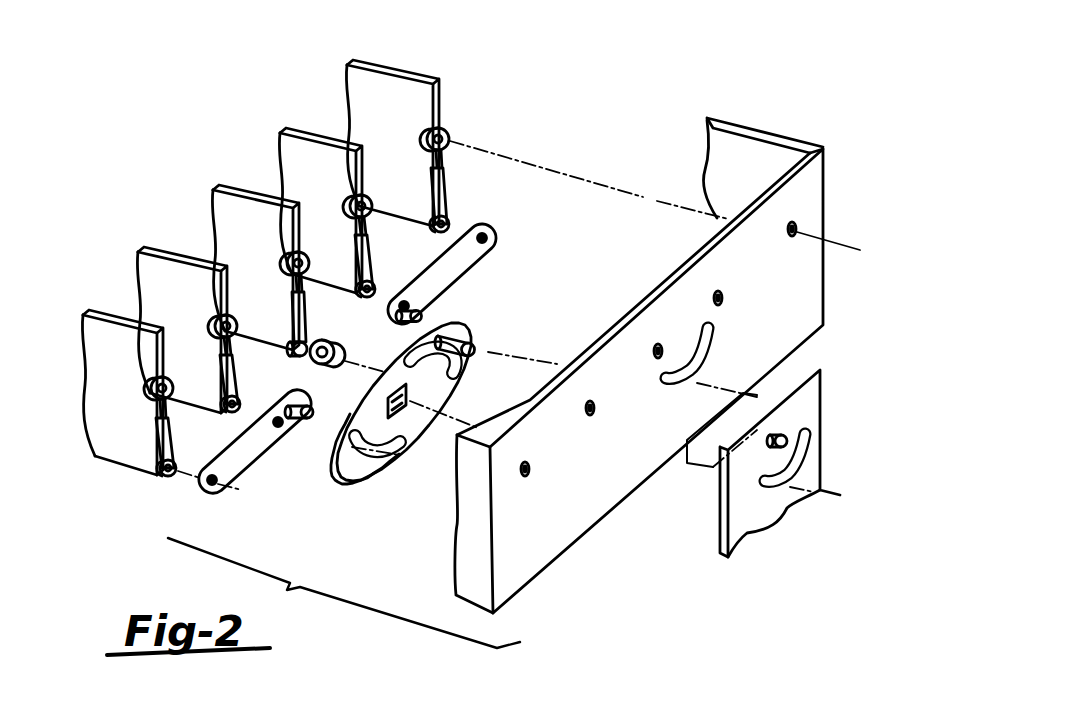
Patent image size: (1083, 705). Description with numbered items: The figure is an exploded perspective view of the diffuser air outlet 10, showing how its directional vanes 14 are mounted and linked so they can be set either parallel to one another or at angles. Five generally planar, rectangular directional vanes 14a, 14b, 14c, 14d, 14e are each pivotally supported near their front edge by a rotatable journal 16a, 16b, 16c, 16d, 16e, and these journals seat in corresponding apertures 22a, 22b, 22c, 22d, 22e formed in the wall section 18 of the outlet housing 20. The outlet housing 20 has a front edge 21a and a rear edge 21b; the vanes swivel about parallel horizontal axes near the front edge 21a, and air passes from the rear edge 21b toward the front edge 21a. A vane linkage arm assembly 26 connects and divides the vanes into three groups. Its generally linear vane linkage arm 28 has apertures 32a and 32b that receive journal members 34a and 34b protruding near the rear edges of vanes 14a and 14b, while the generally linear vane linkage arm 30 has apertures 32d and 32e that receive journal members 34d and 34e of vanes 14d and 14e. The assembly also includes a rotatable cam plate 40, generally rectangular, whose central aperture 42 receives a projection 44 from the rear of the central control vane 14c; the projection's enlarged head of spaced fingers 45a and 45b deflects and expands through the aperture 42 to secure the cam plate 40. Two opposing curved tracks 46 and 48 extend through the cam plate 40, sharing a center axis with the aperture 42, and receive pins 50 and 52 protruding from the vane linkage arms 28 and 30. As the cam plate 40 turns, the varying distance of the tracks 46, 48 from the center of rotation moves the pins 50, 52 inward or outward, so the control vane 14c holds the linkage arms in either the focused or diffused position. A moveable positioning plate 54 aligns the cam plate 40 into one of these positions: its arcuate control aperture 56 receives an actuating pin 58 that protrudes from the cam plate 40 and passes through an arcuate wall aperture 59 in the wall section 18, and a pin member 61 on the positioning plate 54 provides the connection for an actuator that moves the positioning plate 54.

The diffuser air outlet 10 is at (595, 110).
The directional vanes 14 is at (413, 65).
The directional vane 14a is at (352, 65).
The directional vane 14b is at (282, 134).
The directional vane 14c is at (216, 191).
The directional vane 14d is at (150, 255).
The directional vane 14e is at (94, 318).
The rotatable journal 16a is at (450, 132).
The rotatable journal 16b is at (374, 201).
The rotatable journal 16c is at (311, 261).
The rotatable journal 16d is at (239, 323).
The rotatable journal 16e is at (172, 382).
The wall section 18 is at (526, 546).
The outlet housing 20 is at (826, 183).
The front edge 21a is at (792, 173).
The rear edge 21b is at (584, 534).
The aperture 22a is at (798, 228).
The aperture 22b is at (724, 298).
The aperture 22c is at (662, 344).
The aperture 22d is at (597, 403).
The aperture 22e is at (532, 466).
The vane linkage arm assembly 26 is at (343, 452).
The vane linkage arm 28 is at (462, 283).
The vane linkage arm 30 is at (264, 462).
The aperture 32a is at (487, 236).
The aperture 32b is at (425, 314).
The aperture 32d is at (278, 418).
The aperture 32e is at (210, 490).
The journal member 34a is at (453, 216).
The journal member 34b is at (381, 288).
The journal member 34d is at (243, 403).
The journal member 34e is at (178, 466).
The cam plate 40 is at (437, 458).
The central aperture 42 is at (409, 398).
The projection 44 is at (307, 338).
The finger 45a is at (334, 345).
The finger 45b is at (336, 360).
The track 46 is at (463, 373).
The track 48 is at (371, 466).
The pin 50 is at (430, 318).
The pin 52 is at (282, 418).
The positioning plate 54 is at (742, 498).
The control aperture 56 is at (803, 476).
The actuating pin 58 is at (478, 346).
The wall aperture 59 is at (711, 364).
The pin member 61 is at (787, 433).